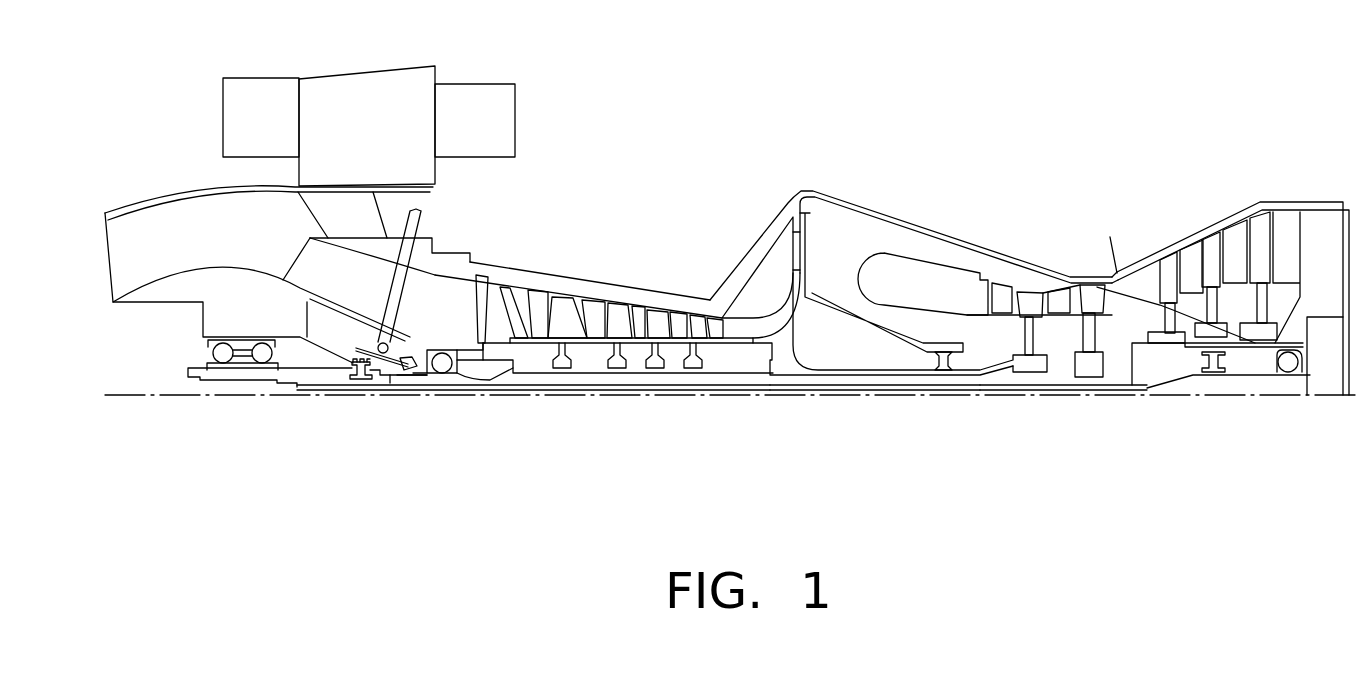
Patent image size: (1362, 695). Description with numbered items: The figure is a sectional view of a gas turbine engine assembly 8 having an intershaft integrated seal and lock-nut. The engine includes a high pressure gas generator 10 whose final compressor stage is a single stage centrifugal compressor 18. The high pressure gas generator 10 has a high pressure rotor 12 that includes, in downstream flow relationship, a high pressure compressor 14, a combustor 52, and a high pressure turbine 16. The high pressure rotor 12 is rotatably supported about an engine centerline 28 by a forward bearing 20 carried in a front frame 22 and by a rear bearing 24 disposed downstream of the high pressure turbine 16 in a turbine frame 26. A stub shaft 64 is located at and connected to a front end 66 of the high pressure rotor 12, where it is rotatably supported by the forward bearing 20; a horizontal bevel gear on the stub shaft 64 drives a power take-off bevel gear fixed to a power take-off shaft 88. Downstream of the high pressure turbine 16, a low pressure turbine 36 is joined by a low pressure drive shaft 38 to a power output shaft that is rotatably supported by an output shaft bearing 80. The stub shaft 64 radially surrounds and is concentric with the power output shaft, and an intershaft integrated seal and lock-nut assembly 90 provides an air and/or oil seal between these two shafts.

The gas turbine engine assembly 8 is at (558, 452).
The high pressure gas generator 10 is at (675, 266).
The high pressure rotor 12 is at (710, 355).
The high pressure compressor 14 is at (582, 280).
The high pressure turbine 16 is at (1061, 257).
The single stage centrifugal compressor 18 is at (788, 394).
The forward bearing 20 is at (443, 374).
The front frame 22 is at (447, 288).
The rear bearing 24 is at (1295, 375).
The turbine frame 26 is at (1118, 273).
The engine centerline 28 is at (823, 393).
The low pressure turbine 36 is at (1196, 209).
The low pressure drive shaft 38 is at (960, 390).
The combustor 52 is at (903, 238).
The stub shaft 64 is at (460, 381).
The front end 66 is at (488, 378).
The output shaft bearing 80 is at (358, 390).
The power take-off shaft 88 is at (403, 283).
The intershaft integrated seal and lock-nut assembly 90 is at (382, 395).